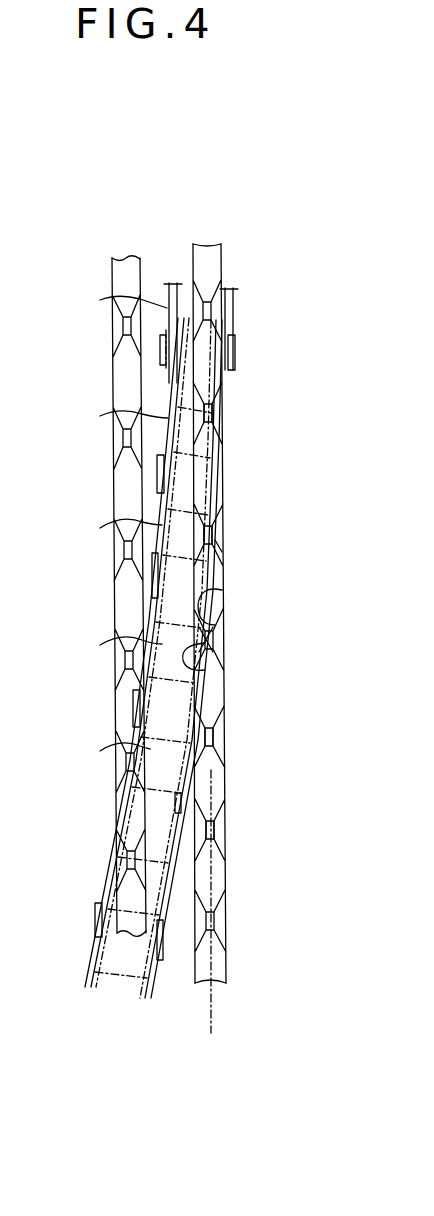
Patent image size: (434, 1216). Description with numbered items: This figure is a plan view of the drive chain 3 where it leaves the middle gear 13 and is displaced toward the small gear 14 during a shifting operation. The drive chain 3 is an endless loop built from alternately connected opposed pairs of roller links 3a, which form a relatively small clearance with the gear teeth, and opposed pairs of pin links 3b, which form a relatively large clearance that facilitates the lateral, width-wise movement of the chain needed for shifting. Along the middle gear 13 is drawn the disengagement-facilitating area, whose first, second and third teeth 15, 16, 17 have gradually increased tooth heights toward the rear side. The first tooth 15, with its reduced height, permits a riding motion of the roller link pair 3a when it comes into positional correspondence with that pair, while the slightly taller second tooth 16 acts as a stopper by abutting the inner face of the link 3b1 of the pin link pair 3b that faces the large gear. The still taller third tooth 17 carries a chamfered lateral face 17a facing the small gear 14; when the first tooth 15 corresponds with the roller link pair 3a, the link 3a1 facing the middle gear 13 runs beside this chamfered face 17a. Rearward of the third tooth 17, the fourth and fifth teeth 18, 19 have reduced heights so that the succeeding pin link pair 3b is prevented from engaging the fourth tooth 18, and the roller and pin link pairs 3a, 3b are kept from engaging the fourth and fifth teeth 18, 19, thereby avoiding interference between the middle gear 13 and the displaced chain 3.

The drive chain 3 is at (90, 945).
The roller link pair 3a is at (100, 416).
The pin link pair 3b is at (100, 300).
The link of roller link pair 3a1 is at (222, 590).
The link of pin link pair 3b1 is at (222, 547).
The middle gear 13 is at (232, 250).
The small gear 14 is at (100, 262).
The first tooth 15 is at (215, 400).
The second tooth 16 is at (200, 530).
The third tooth 17 is at (218, 646).
The chamfered lateral face 17a is at (203, 668).
The fourth tooth 18 is at (218, 737).
The fifth tooth 19 is at (215, 830).